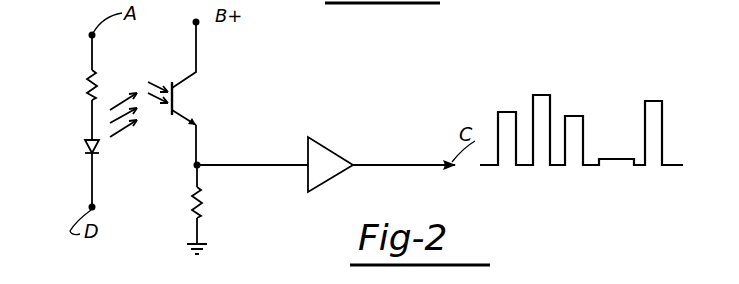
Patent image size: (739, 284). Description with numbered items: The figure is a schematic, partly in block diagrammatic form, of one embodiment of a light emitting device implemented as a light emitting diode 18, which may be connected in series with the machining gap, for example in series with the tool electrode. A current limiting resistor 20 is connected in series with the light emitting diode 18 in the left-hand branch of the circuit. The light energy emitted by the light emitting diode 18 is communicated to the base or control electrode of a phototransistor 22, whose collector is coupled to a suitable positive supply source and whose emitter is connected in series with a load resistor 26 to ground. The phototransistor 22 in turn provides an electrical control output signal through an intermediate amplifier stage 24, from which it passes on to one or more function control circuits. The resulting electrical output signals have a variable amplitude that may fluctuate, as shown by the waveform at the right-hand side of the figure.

The light emitting diode 18 is at (83, 150).
The current limiting resistor 20 is at (100, 73).
The phototransistor 22 is at (181, 81).
The intermediate amplifier stage 24 is at (325, 148).
The load resistor 26 is at (204, 196).